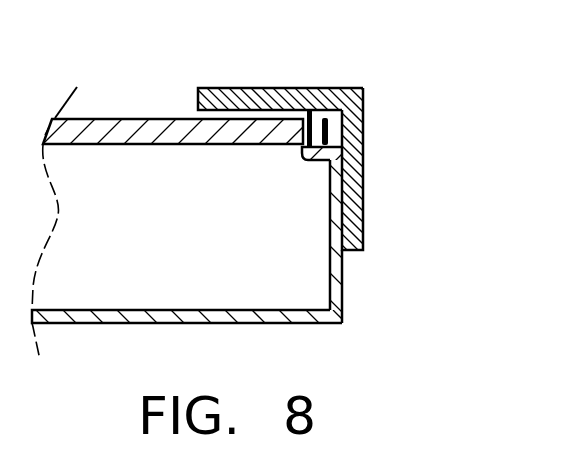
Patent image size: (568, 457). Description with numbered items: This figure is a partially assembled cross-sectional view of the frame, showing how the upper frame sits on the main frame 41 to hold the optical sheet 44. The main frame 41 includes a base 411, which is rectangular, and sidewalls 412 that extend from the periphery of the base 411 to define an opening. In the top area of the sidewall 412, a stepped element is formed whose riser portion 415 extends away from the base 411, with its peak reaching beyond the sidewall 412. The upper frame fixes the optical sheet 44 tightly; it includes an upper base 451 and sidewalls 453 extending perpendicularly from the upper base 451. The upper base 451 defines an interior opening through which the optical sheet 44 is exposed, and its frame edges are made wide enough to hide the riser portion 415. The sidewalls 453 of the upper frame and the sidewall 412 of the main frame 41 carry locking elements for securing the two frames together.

The optical sheet 44 is at (104, 127).
The upper base 451 is at (231, 88).
The sidewall of upper frame 453 is at (355, 176).
The riser portion 415 is at (308, 117).
The sidewall 412 is at (337, 271).
The base 411 is at (303, 322).
The main frame 41 is at (273, 189).